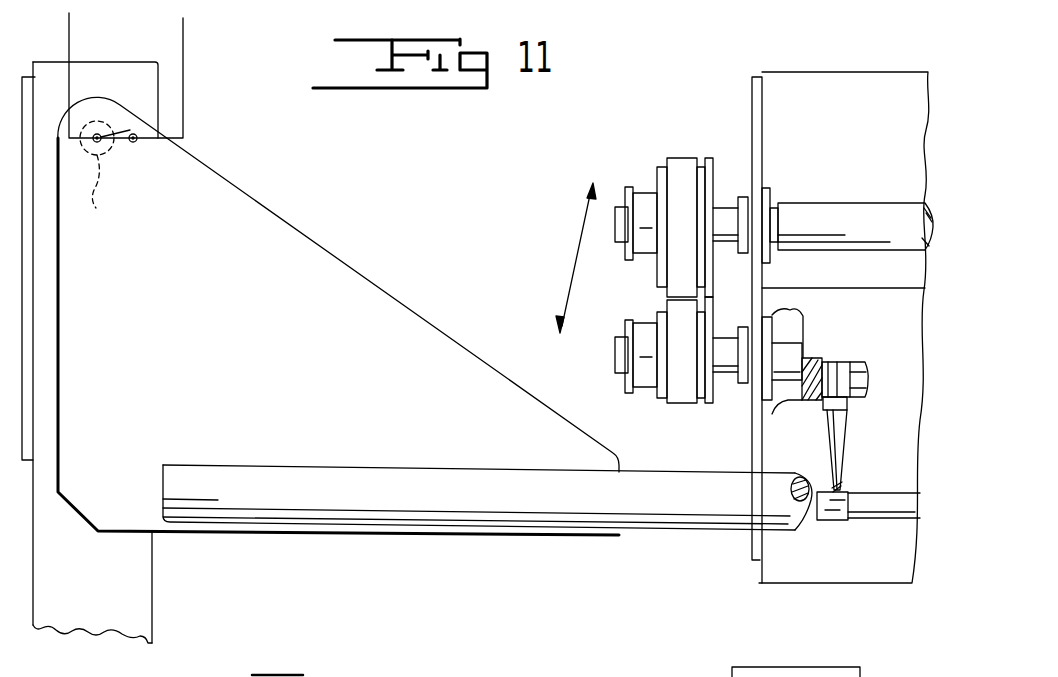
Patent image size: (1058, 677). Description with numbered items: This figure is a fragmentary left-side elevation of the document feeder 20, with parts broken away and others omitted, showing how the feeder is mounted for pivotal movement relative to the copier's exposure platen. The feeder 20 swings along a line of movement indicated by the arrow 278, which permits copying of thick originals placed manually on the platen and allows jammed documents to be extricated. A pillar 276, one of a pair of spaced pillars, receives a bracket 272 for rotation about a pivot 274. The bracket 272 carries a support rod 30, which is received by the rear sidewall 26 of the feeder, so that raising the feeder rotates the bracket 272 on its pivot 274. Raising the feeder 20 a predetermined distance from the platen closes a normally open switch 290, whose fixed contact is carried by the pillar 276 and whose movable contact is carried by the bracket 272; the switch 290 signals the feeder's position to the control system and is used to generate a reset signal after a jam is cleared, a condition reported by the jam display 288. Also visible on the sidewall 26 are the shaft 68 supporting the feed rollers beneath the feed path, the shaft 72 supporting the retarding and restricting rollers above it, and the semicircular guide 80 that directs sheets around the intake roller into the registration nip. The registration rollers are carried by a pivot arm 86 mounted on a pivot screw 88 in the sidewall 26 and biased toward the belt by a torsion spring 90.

The document feeder 20 is at (775, 63).
The rear sidewall 26 is at (752, 104).
The support rod 30 is at (688, 528).
The shaft 68 is at (765, 403).
The shaft 72 is at (840, 203).
The semicircular guide 80 is at (833, 588).
The pivot arm 86 is at (866, 440).
The pivot screw 88 is at (837, 361).
The torsion spring 90 is at (805, 358).
The bracket 272 is at (380, 282).
The pivot 274 is at (113, 179).
The pillar 276 is at (153, 603).
The arrow indicating line of swinging movement 278 is at (573, 273).
The jam display 288 is at (767, 667).
The normally open switch 290 is at (125, 133).